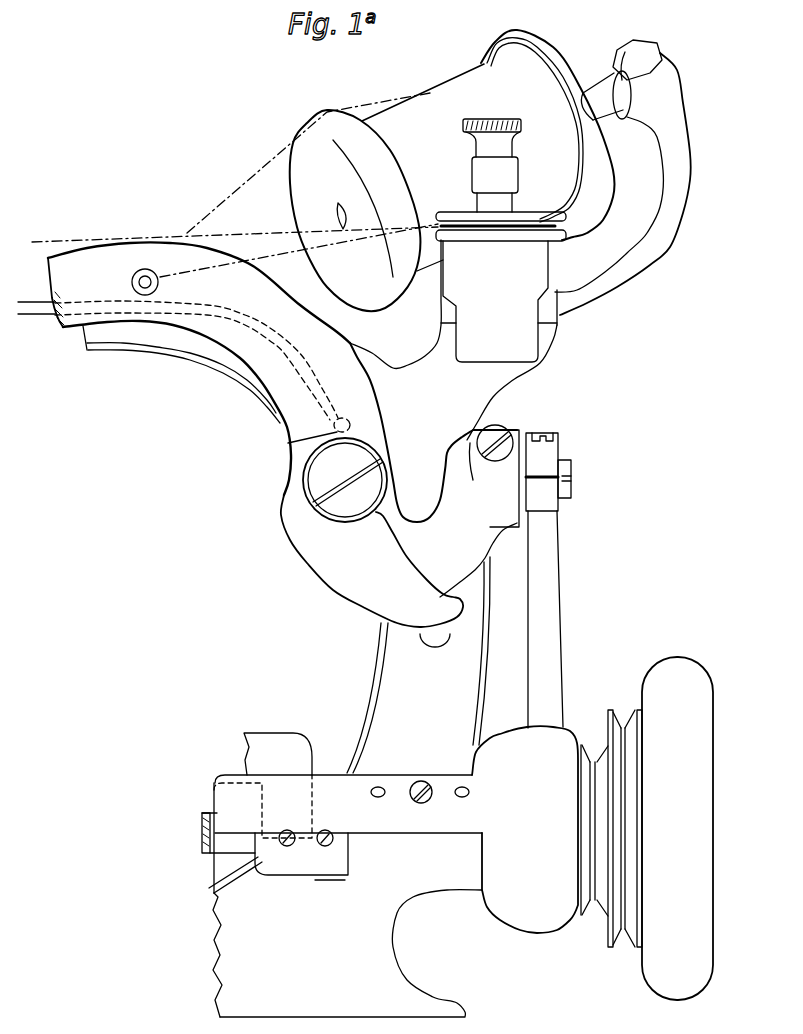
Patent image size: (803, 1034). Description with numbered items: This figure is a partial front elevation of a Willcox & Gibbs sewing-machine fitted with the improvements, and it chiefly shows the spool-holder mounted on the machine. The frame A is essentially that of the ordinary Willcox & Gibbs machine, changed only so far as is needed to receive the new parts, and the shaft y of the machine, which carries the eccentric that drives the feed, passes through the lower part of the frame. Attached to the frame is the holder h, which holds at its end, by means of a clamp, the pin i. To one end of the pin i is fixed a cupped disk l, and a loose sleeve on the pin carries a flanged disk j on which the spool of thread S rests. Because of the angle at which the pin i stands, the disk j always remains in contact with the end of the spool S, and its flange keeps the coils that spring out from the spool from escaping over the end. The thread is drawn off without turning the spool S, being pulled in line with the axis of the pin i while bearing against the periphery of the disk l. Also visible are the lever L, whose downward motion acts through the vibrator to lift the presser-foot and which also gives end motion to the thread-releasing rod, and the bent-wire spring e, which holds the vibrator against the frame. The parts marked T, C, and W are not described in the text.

The spool of thread S is at (452, 170).
The adjusting screw knob T is at (492, 165).
The cupped disk l is at (363, 208).
The lever L is at (184, 368).
The pin i is at (630, 79).
The disk j is at (597, 99).
The holder h is at (623, 184).
The bent-wire spring e is at (386, 506).
The column C is at (520, 576).
The frame A is at (393, 871).
The shaft y is at (228, 838).
The pulley W is at (643, 808).